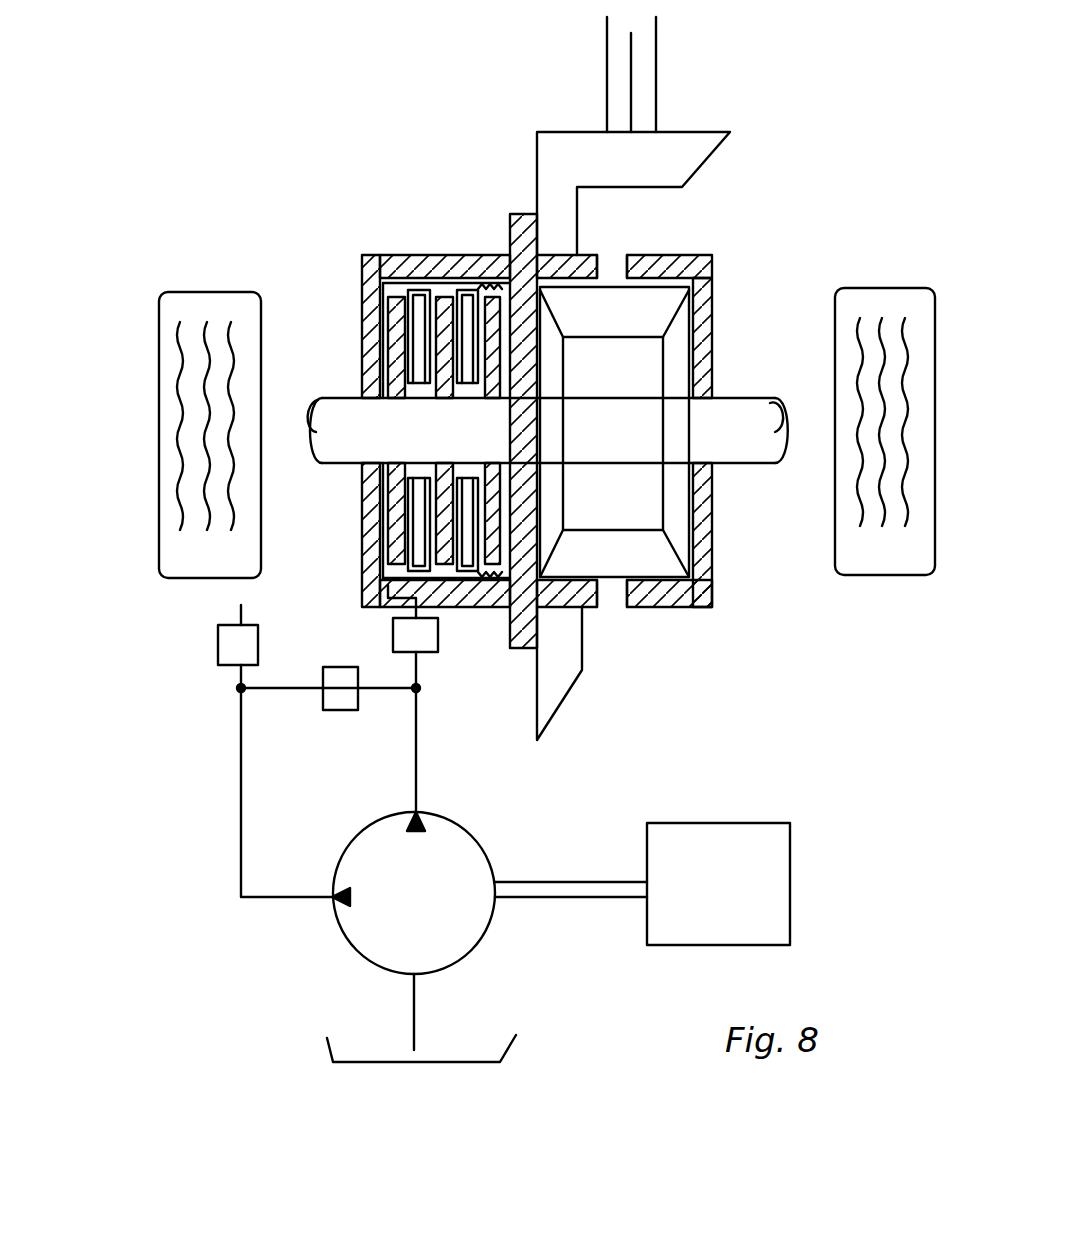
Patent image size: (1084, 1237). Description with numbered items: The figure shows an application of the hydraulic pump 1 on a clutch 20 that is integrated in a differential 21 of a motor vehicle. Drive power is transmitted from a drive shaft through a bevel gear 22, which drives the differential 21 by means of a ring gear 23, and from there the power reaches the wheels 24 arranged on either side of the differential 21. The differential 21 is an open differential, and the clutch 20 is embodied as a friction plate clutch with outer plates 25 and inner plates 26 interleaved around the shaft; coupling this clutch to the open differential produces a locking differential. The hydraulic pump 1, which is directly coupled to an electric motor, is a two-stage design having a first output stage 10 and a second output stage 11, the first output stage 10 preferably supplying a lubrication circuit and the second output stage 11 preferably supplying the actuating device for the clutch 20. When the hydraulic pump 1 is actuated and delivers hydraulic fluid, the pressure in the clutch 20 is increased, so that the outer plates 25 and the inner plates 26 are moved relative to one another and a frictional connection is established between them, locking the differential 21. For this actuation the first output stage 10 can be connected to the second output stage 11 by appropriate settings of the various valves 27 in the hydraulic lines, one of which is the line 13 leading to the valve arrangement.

The hydraulic pump 1 is at (482, 843).
The first output stage 10 is at (270, 897).
The second output stage 11 is at (416, 777).
The control line 13 is at (241, 612).
The clutch 20 is at (425, 240).
The differential 21 is at (684, 628).
The bevel gear 22 is at (690, 155).
The ring gear 23 is at (566, 672).
The wheels 24 is at (210, 292).
The outer plates 25 is at (407, 292).
The inner plates 26 is at (441, 285).
The valves 27 is at (218, 650).